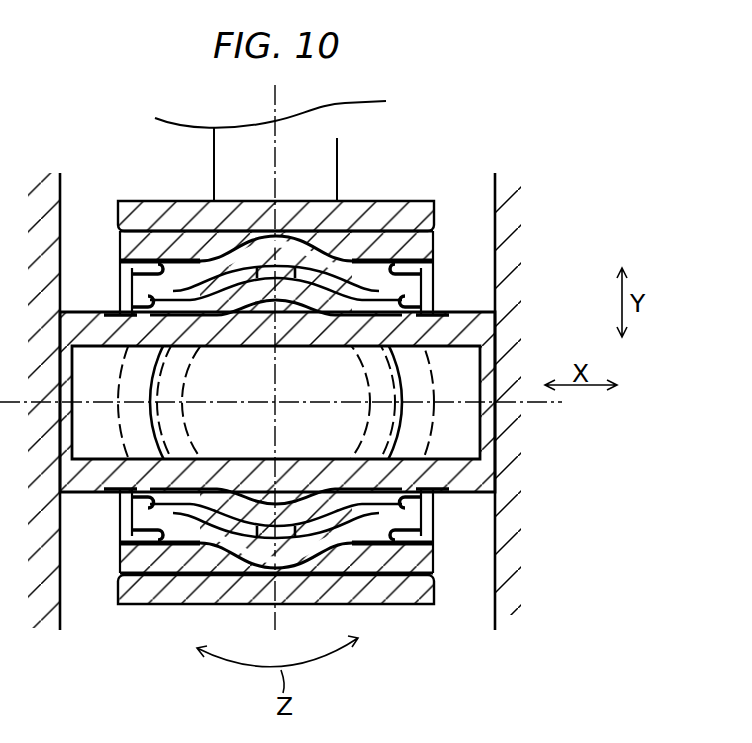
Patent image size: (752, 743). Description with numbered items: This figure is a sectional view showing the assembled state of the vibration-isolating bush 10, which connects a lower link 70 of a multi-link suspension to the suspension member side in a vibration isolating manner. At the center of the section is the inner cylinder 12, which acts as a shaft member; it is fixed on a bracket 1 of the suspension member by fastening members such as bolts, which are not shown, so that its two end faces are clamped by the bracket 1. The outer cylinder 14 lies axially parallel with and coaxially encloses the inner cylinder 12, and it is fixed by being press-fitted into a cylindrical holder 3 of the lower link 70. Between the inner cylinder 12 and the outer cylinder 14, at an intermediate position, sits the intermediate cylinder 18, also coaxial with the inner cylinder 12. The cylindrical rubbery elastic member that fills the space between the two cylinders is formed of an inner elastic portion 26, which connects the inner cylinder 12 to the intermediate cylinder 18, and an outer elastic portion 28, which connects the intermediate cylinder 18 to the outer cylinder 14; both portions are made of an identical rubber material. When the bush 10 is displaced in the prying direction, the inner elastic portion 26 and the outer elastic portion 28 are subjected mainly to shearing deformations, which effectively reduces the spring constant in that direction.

The bracket 1 is at (62, 596).
The cylindrical holder 3 is at (410, 214).
The vibration-isolating bush 10 is at (357, 421).
The inner cylinder 12 is at (446, 313).
The outer cylinder 14 is at (436, 238).
The intermediate cylinder 18 is at (134, 519).
The inner elastic portion 26 is at (432, 506).
The outer elastic portion 28 is at (437, 263).
The lower link 70 is at (338, 138).